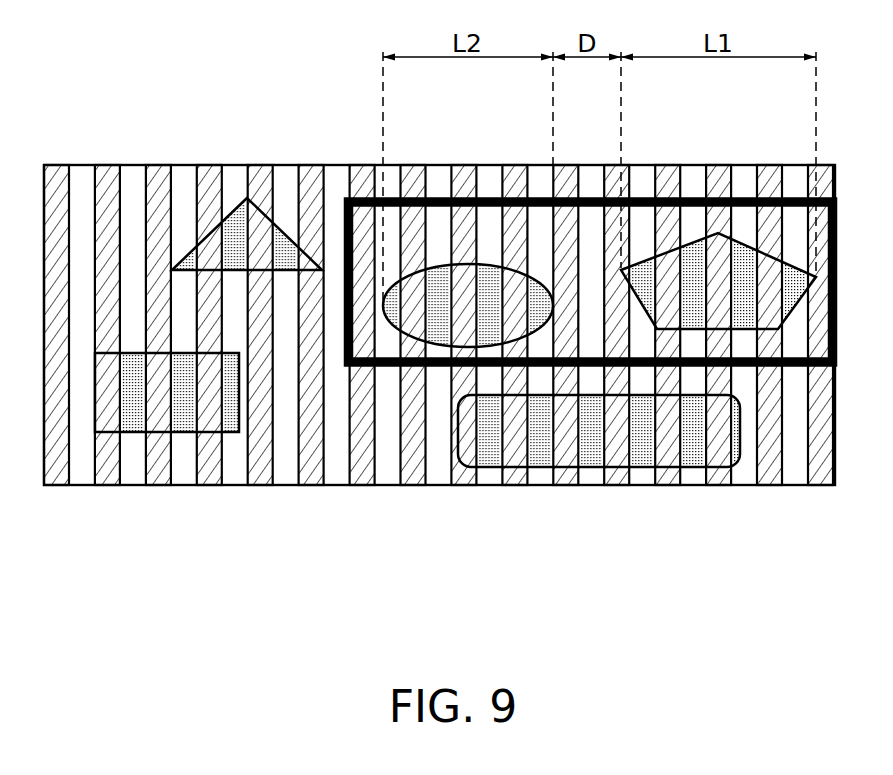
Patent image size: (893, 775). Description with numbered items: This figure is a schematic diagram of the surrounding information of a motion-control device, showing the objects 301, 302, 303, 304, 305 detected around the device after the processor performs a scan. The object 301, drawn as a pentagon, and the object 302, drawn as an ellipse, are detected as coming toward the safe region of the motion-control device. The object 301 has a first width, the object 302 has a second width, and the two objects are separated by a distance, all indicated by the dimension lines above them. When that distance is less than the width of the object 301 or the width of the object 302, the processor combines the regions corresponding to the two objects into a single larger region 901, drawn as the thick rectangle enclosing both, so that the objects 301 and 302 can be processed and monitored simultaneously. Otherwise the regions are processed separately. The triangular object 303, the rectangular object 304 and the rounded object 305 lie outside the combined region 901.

The object 301 is at (690, 233).
The object 302 is at (433, 263).
The object 303 is at (233, 208).
The object 304 is at (187, 433).
The object 305 is at (540, 468).
The region 901 is at (592, 198).